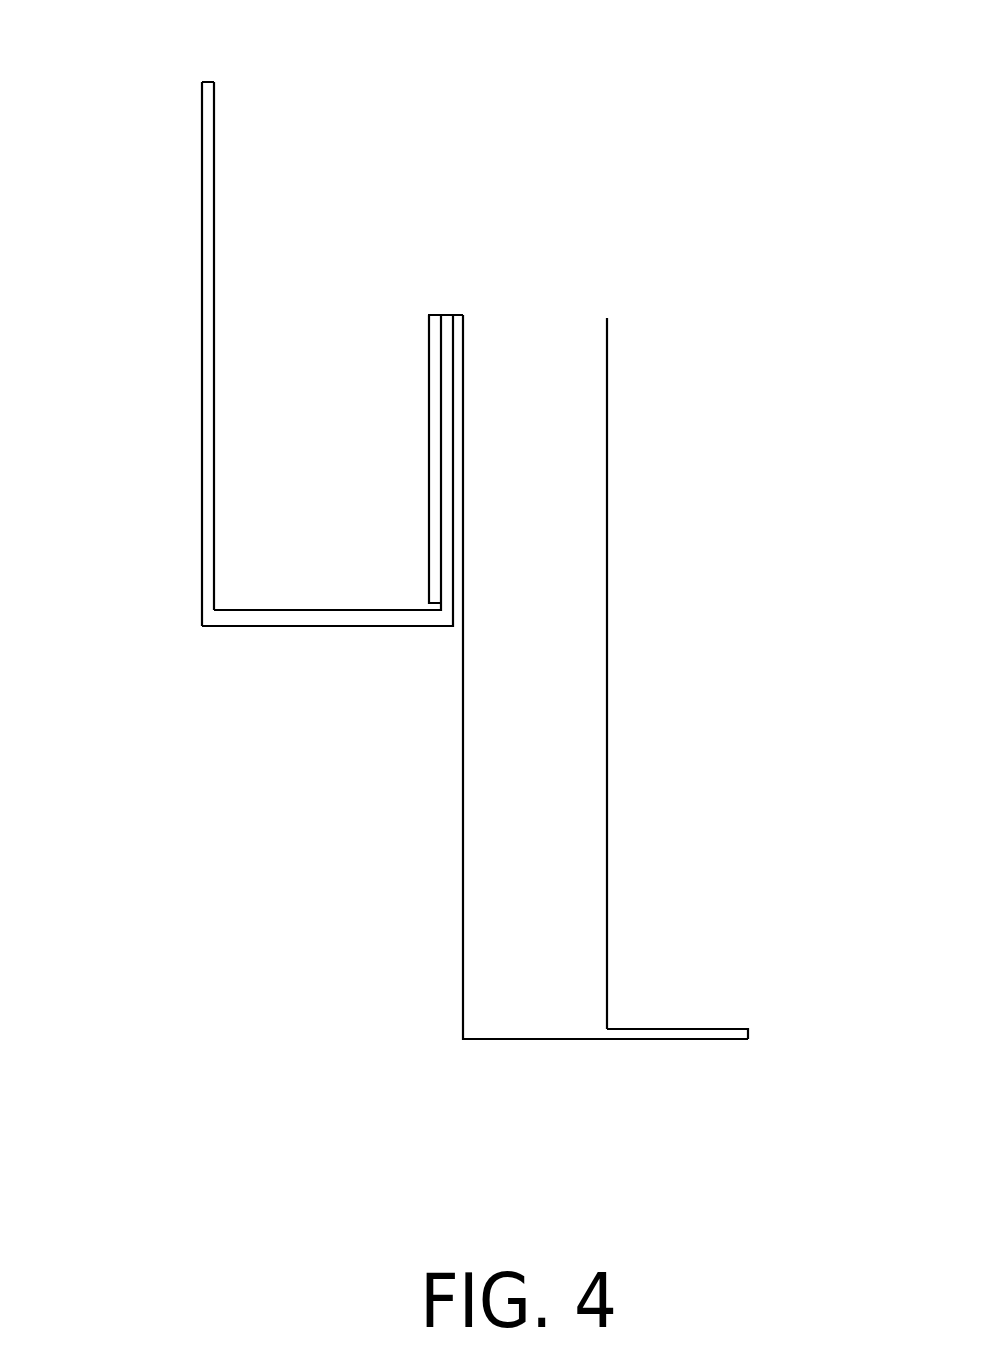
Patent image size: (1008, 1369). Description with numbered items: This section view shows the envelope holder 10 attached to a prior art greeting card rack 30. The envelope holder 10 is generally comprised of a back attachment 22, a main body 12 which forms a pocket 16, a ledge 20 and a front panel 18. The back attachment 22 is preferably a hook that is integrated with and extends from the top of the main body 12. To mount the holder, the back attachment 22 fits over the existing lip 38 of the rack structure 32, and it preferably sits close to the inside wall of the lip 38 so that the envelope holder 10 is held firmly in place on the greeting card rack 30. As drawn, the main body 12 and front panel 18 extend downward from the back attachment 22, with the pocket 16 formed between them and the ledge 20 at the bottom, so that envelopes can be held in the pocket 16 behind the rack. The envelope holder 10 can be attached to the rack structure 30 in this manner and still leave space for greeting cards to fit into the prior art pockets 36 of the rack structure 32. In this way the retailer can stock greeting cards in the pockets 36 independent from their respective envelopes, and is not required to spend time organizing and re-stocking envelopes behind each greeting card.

The envelope holder 10 is at (555, 769).
The main body 12 is at (497, 743).
The pocket 16 is at (638, 673).
The front panel 18 is at (720, 673).
The ledge 20 is at (735, 984).
The back attachment 22 is at (270, 451).
The greeting card rack 30 is at (250, 315).
The rack structure 32 is at (157, 354).
The pockets 36 is at (264, 346).
The lip 38 is at (270, 459).